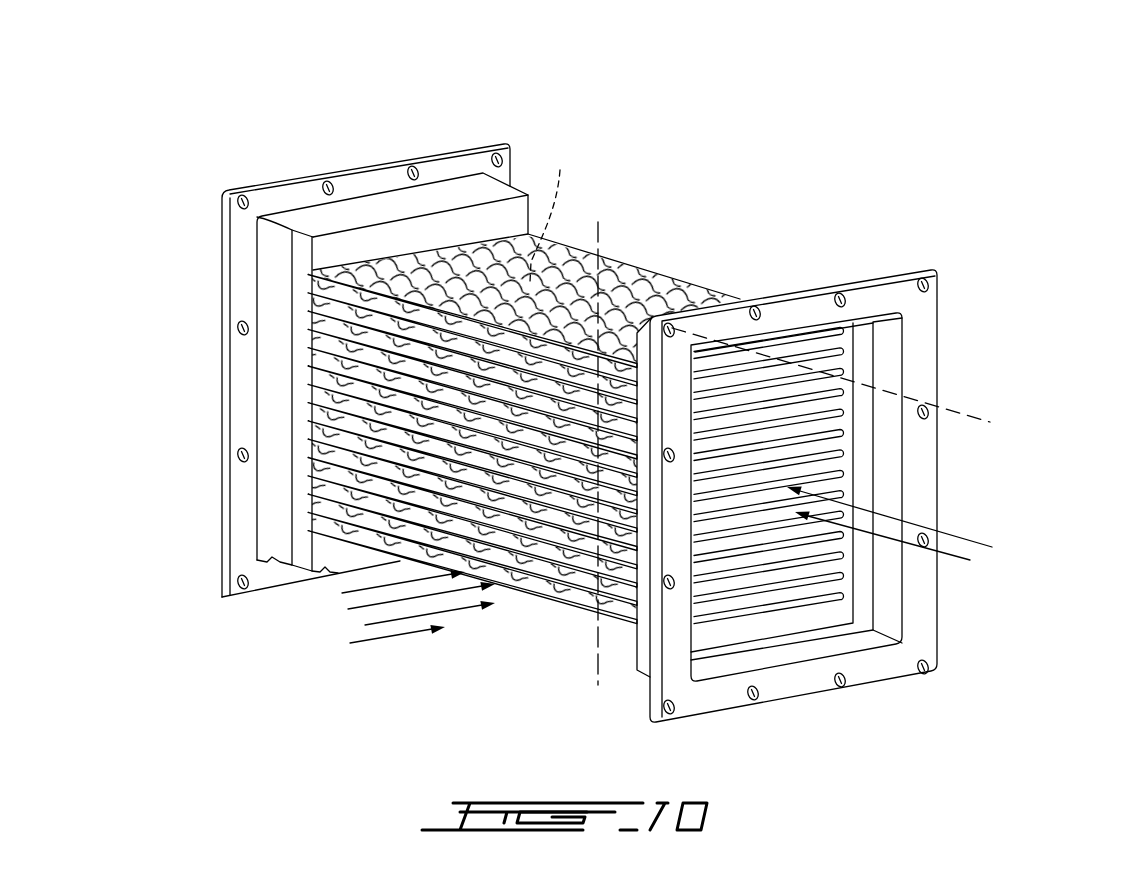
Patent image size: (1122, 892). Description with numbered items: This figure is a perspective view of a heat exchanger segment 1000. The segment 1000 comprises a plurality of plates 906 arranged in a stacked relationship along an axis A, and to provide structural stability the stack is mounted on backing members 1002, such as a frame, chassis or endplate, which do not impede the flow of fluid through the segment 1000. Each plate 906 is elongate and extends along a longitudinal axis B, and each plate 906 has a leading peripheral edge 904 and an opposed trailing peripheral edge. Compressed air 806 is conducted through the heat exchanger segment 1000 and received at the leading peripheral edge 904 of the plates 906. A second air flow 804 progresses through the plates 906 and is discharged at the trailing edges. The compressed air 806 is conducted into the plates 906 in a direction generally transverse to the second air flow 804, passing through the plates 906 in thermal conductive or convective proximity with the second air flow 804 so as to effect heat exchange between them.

The heat exchanger segment 1000 is at (621, 384).
The backing member 1002 is at (287, 193).
The leading peripheral edge 904 is at (400, 297).
The plate 906 is at (666, 281).
The second air flow 804 is at (390, 637).
The compressed air 806 is at (953, 558).